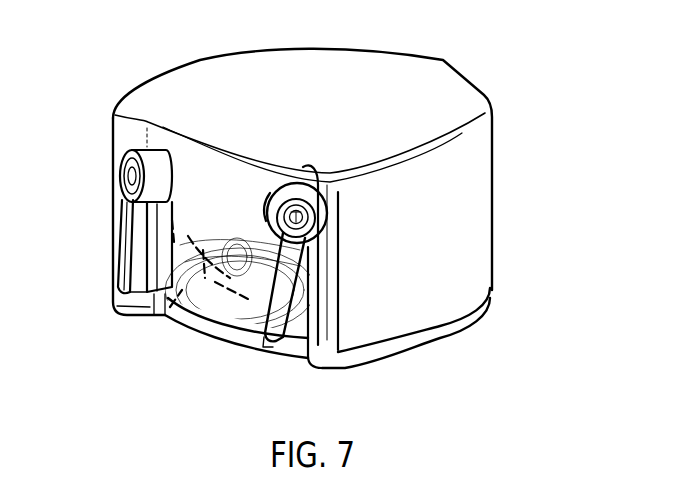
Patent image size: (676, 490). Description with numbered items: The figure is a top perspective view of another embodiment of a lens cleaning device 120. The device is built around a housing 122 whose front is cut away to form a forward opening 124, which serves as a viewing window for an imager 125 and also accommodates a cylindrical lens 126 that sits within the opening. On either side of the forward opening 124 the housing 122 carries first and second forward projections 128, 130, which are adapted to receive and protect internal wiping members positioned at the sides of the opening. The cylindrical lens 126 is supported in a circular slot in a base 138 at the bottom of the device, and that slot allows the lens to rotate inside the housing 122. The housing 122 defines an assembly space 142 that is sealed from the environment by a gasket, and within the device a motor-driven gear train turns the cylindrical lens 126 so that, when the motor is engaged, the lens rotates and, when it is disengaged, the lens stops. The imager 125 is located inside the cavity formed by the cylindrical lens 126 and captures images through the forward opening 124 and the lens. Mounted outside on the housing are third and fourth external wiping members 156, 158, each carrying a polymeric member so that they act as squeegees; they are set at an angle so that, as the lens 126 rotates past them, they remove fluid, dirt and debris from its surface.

The lens cleaning device 120 is at (505, 54).
The housing 122 is at (471, 228).
The forward opening 124 is at (187, 302).
The imager 125 is at (265, 328).
The cylindrical lens 126 is at (207, 310).
The first forward projection 128 is at (118, 142).
The second forward projection 130 is at (323, 342).
The base 138 is at (427, 338).
The assembly space 142 is at (157, 235).
The third external wiping member 156 is at (128, 228).
The fourth external wiping member 158 is at (268, 347).